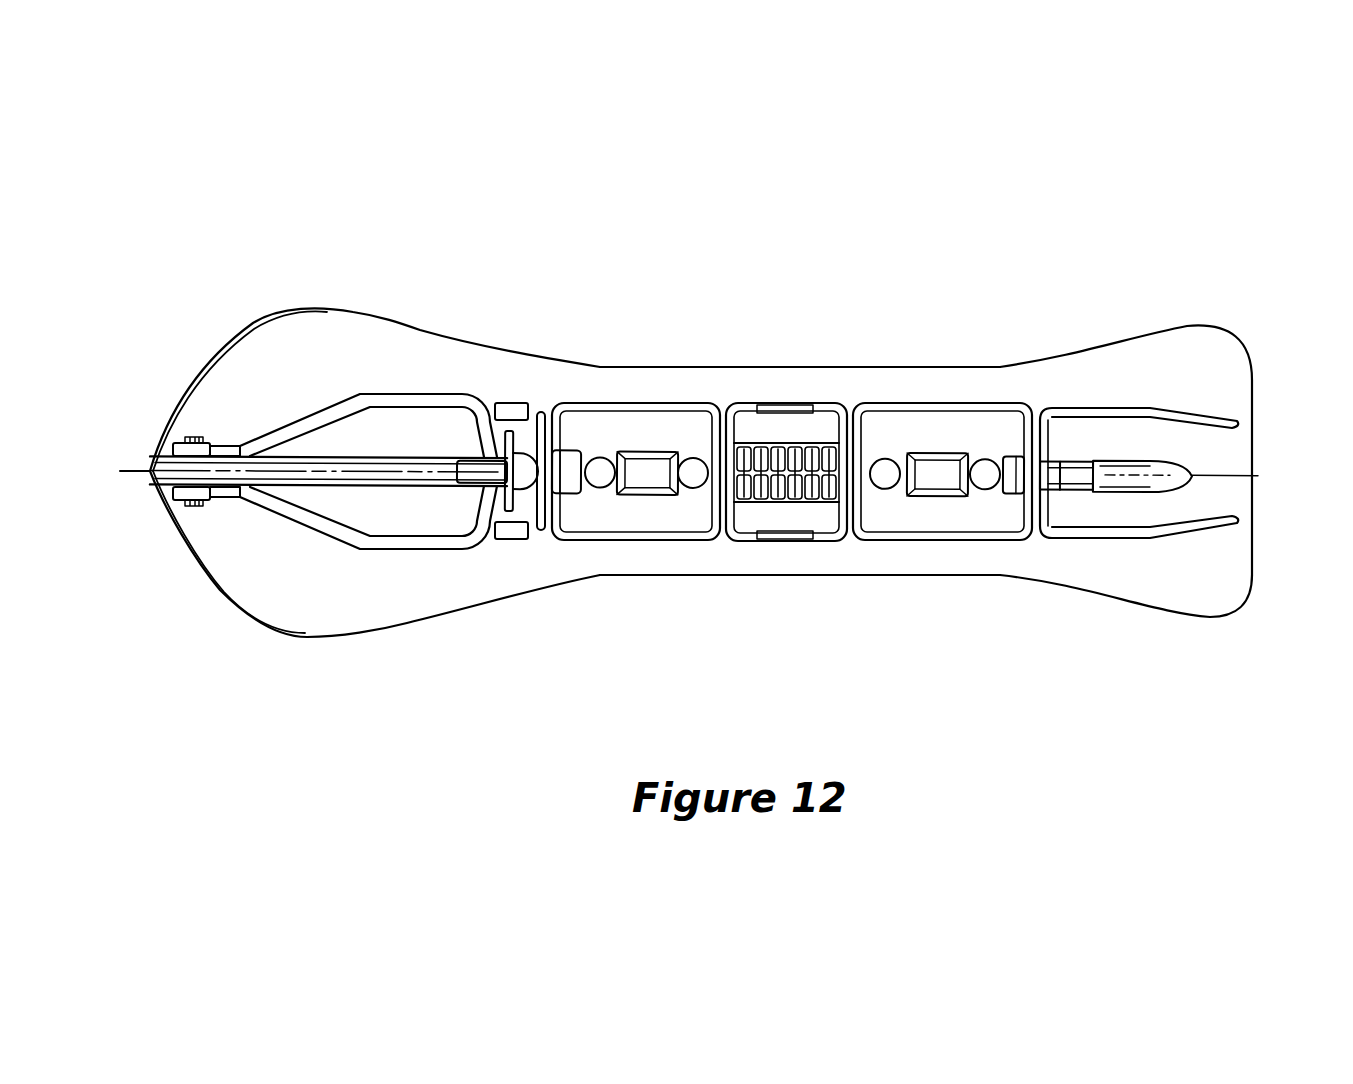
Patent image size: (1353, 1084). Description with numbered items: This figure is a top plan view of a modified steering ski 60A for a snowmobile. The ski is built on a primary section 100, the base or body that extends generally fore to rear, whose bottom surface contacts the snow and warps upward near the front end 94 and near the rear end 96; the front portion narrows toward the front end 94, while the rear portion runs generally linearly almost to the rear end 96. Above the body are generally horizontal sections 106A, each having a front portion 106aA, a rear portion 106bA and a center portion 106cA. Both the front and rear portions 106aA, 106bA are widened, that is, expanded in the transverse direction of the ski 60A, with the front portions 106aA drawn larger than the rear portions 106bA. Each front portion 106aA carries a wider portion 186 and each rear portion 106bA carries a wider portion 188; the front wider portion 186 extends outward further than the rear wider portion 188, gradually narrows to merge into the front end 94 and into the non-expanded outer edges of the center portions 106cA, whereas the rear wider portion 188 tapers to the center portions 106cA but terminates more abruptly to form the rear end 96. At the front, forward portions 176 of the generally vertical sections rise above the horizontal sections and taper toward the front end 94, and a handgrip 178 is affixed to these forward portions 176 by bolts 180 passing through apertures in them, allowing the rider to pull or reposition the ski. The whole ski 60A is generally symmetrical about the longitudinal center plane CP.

The modified steering ski 60A is at (916, 316).
The front end 94 is at (152, 470).
The rear end 96 is at (1255, 452).
The primary section 100 is at (414, 518).
The generally horizontal section 106A is at (632, 380).
The front portion 106aA is at (373, 347).
The rear portion 106bA is at (1185, 338).
The center portion 106cA is at (747, 374).
The forward portion 176 is at (303, 400).
The handgrip 178 is at (247, 455).
The bolt 180 is at (191, 505).
The wider portion 186 is at (311, 309).
The wider portion 188 is at (1210, 326).
The longitudinal center plane CP is at (150, 470).